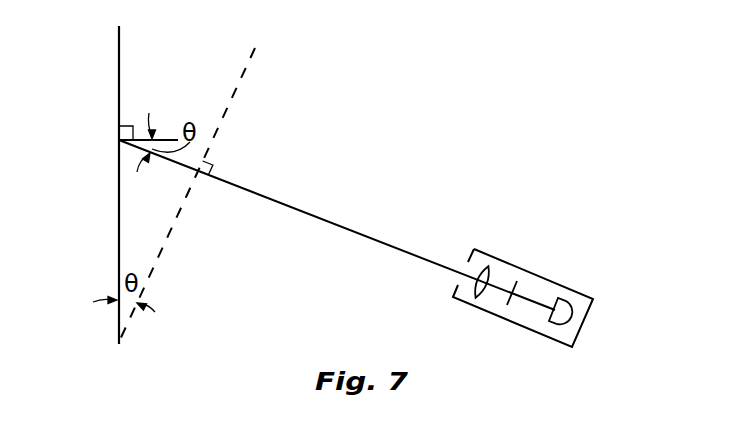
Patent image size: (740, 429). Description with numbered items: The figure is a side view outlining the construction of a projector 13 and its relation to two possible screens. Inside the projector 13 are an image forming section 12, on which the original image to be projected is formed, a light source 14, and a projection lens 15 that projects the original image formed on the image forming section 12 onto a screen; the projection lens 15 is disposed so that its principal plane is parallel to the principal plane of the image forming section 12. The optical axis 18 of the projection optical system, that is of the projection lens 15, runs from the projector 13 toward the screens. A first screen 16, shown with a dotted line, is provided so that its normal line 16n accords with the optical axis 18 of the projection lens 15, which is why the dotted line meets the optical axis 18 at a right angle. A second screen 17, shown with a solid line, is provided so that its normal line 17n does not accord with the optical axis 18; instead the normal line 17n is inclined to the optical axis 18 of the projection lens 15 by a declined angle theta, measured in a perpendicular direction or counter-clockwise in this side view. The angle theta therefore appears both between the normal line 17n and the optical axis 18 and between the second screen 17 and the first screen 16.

The image forming section 12 is at (507, 305).
The projector 13 is at (508, 264).
The light source 14 is at (562, 310).
The projection lens 15 is at (473, 290).
The first screen 16 is at (241, 77).
The normal line of the first screen 16n is at (222, 181).
The second screen 17 is at (119, 92).
The normal line of the second screen 17n is at (176, 140).
The optical axis 18 is at (328, 219).